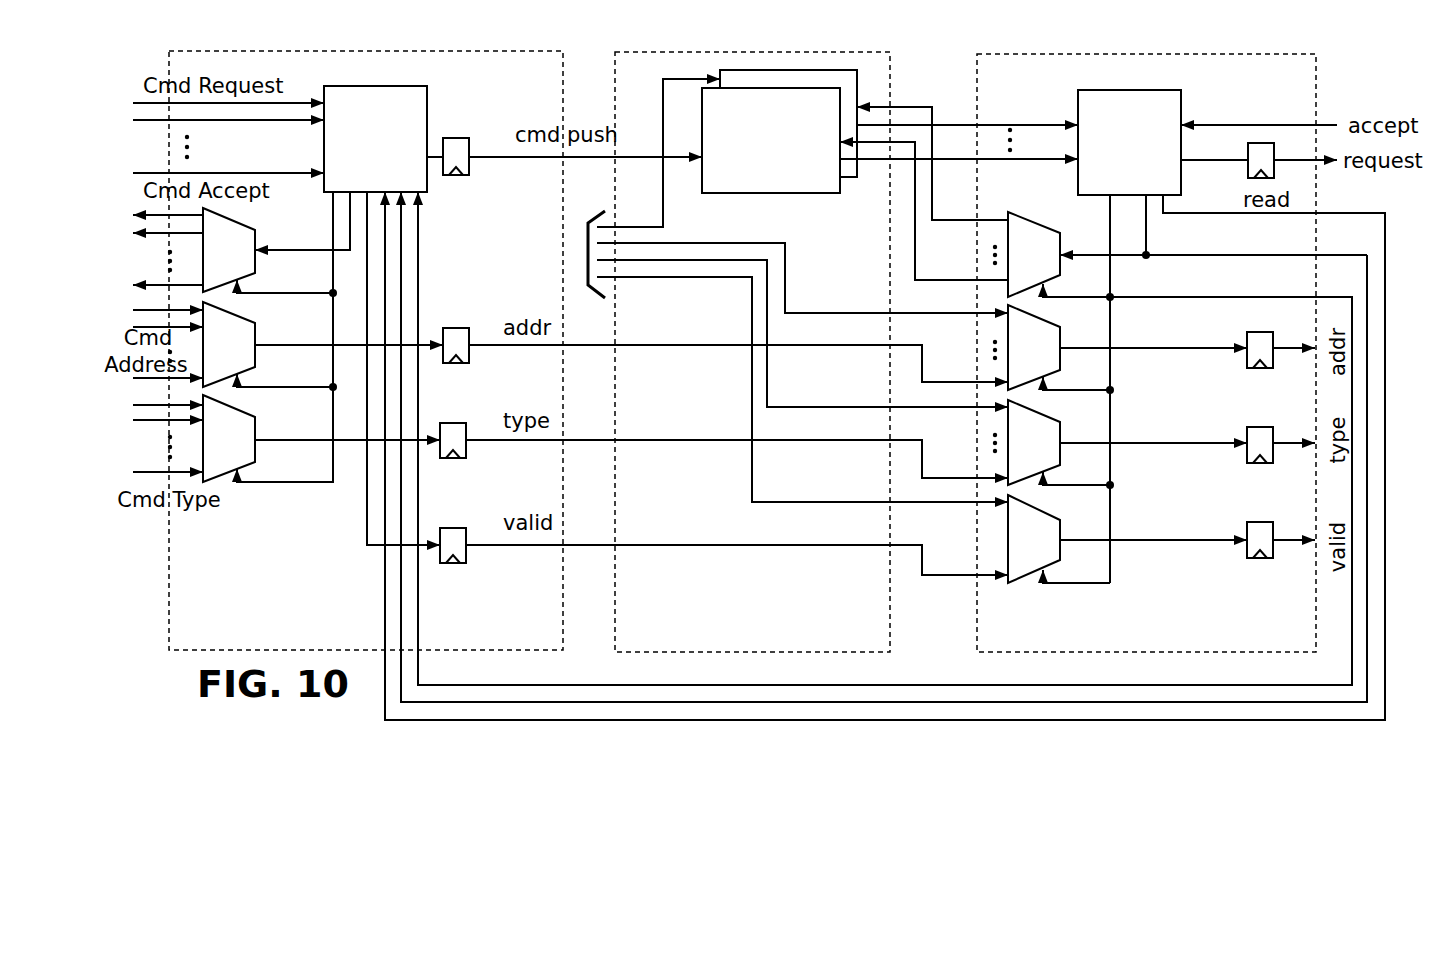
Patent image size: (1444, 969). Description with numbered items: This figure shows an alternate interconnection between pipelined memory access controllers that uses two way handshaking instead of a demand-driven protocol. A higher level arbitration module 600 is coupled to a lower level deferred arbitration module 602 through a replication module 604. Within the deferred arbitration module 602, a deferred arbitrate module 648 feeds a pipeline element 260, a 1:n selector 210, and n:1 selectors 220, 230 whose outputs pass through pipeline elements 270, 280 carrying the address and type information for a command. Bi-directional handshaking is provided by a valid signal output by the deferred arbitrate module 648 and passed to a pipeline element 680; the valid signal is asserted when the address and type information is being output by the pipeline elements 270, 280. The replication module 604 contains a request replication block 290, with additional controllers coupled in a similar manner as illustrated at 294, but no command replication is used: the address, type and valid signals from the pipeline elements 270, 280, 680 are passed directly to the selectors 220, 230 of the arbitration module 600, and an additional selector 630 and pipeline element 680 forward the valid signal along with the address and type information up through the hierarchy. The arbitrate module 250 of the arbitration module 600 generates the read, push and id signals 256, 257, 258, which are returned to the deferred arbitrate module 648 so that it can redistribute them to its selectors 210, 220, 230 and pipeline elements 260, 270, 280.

The deferred arbitrate module 648 is at (377, 85).
The pipeline element 260 is at (458, 175).
The selector 210 is at (242, 223).
The selector 220 is at (242, 318).
The selector 230 is at (242, 412).
The pipeline element 270 is at (458, 363).
The pipeline element 280 is at (455, 458).
The pipeline element 680 is at (455, 563).
The coupling to replication module 294 is at (583, 256).
The request replication block 290 is at (790, 70).
The arbitrate module 250 is at (1127, 88).
The read signal 256 is at (1348, 222).
The push signal 257 is at (1353, 253).
The id signal 258 is at (1353, 298).
The selector 630 is at (1035, 510).
The lower level deferred arbitration module 602 is at (366, 350).
The replication module 604 is at (752, 352).
The higher level arbitration module 600 is at (1146, 353).